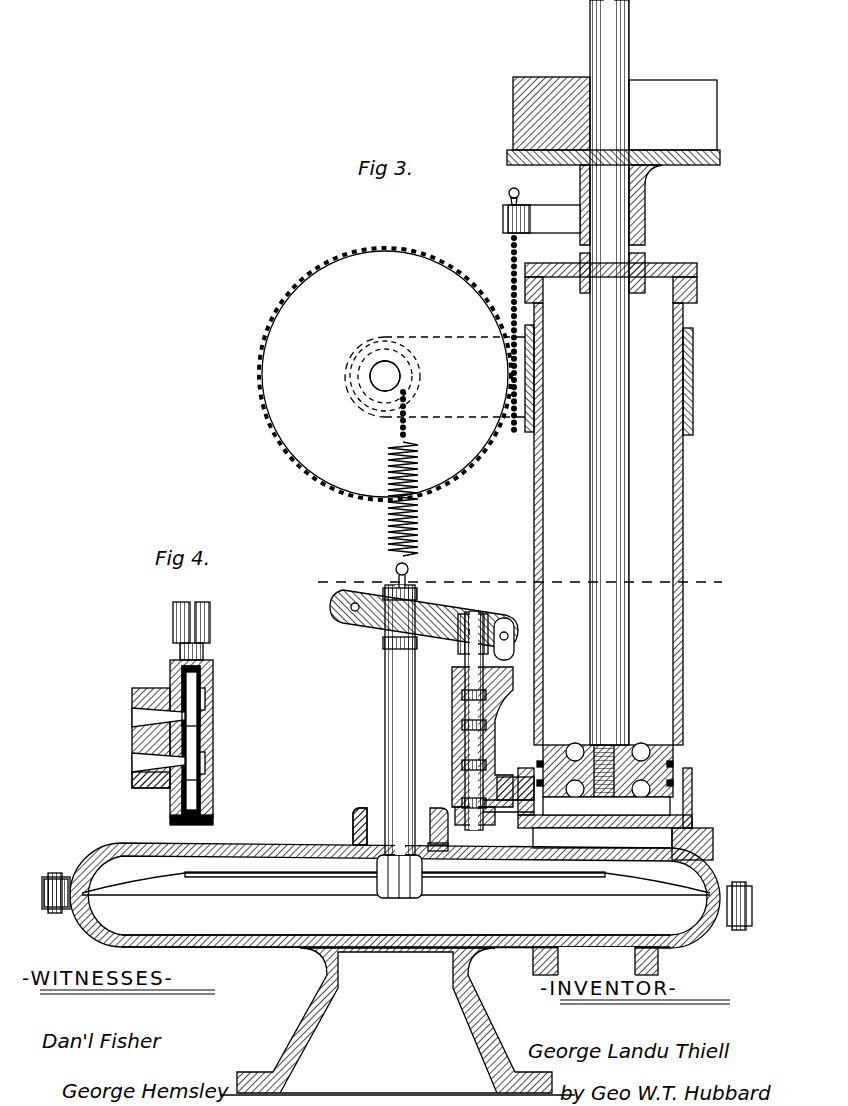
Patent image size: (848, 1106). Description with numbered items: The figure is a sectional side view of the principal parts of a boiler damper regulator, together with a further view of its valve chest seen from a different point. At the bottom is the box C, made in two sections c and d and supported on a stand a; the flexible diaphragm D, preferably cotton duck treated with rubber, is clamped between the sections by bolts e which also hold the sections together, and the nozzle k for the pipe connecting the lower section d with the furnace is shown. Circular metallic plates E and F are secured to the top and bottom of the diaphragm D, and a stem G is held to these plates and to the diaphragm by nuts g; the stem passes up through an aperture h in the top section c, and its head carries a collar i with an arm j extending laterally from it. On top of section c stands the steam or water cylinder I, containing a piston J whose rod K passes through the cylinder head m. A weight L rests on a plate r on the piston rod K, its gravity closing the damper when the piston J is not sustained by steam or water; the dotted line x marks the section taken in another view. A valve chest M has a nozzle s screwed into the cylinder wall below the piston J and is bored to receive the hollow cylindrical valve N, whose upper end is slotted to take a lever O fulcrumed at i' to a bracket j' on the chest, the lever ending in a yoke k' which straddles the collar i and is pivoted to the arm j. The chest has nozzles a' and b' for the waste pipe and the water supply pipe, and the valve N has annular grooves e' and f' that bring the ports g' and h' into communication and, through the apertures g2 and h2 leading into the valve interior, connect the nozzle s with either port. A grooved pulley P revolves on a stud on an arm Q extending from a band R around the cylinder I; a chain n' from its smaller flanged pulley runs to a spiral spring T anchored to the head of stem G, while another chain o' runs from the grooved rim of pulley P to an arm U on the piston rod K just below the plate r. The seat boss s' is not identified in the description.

In FIG. 3, the piston rod K is at (627, 503).
In FIG. 3, the weight L is at (615, 113).
In FIG. 3, the plate r is at (682, 170).
In FIG. 3, the arm U is at (541, 207).
In FIG. 3, the chain o' is at (502, 334).
In FIG. 3, the cylinder head m is at (660, 272).
In FIG. 3, the steam or water cylinder I is at (608, 524).
In FIG. 3, the arm Q is at (516, 435).
In FIG. 3, the band R is at (694, 367).
In FIG. 3, the piston J is at (552, 745).
In FIG. 3, the top section of box c is at (258, 846).
In FIG. 3, the flexible diaphragm D is at (147, 888).
In FIG. 3, the nuts g is at (405, 891).
In FIG. 3, the circular metallic plate F is at (340, 890).
In FIG. 3, the box C is at (42, 893).
In FIG. 3, the bolts e is at (399, 895).
In FIG. 3, the stand a is at (397, 1021).
In FIG. 3, the lower section of box d is at (250, 950).
In FIG. 3, the nozzle k is at (595, 962).
In FIG. 3, the circular metallic plate E is at (345, 832).
In FIG. 3, the aperture h is at (368, 807).
In FIG. 3, the nozzle s is at (396, 606).
In FIG. 3, the stem G is at (384, 688).
In FIG. 3, the spiral spring T is at (418, 520).
In FIG. 3, the arm j is at (386, 569).
In FIG. 3, the chain n' is at (420, 413).
In FIG. 3, the grooved pulley P is at (385, 374).
In FIG. 3, the dotted line x- x is at (519, 585).
In FIG. 3, the lever O is at (424, 612).
In FIG. 3, the collar i is at (407, 591).
In FIG. 3, the yoke k' is at (383, 647).
In FIG. 3, the fulcrum i' is at (487, 623).
In FIG. 3, the bracket j' is at (510, 642).
In FIG. 3, the valve chest M is at (486, 737).
In FIG. 4, the valve chest M is at (213, 704).
In FIG. 3, the hollow cylindrical valve N is at (452, 690).
In FIG. 4, the hollow cylindrical valve N is at (198, 735).
In FIG. 3, the valve seat boss s' is at (475, 832).
In FIG. 4, the nozzle a' is at (144, 723).
In FIG. 4, the port g' is at (138, 723).
In FIG. 4, the port h' is at (137, 771).
In FIG. 4, the nozzle b' is at (140, 795).
In FIG. 4, the aperture g2 is at (215, 692).
In FIG. 4, the annular groove e' is at (215, 698).
In FIG. 4, the aperture h2 is at (215, 762).
In FIG. 4, the annular groove f' is at (211, 793).